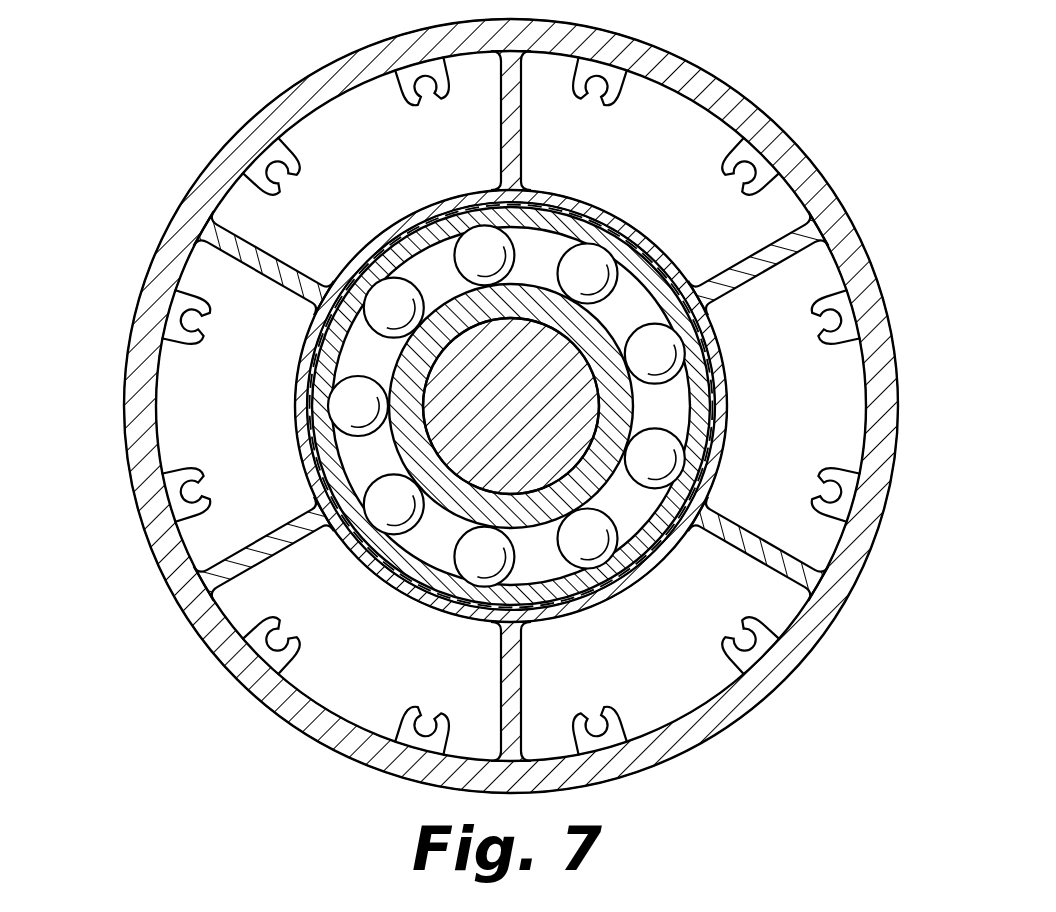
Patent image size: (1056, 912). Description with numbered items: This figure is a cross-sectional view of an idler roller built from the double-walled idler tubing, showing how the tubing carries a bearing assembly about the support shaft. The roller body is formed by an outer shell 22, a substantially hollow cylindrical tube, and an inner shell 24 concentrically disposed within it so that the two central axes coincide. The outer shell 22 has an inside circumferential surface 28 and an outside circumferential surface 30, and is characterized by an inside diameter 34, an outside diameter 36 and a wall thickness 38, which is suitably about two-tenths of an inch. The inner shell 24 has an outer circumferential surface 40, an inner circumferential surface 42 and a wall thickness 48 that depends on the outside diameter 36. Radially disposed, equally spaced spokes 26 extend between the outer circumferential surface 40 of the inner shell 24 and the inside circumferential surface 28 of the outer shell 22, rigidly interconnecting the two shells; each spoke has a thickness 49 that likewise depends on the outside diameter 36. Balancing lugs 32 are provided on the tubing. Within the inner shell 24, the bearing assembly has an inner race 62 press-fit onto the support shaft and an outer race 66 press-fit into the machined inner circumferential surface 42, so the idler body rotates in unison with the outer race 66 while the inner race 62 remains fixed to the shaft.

The outer shell 22 is at (310, 730).
The inner shell 24 is at (299, 378).
The spokes 26 is at (490, 139).
The inside circumferential surface 28 is at (377, 738).
The outside circumferential surface 30 is at (250, 690).
The balancing lugs 32 is at (175, 300).
The inside diameter 34 is at (672, 48).
The outside diameter 36 is at (545, 22).
The wall thickness 38 is at (205, 413).
The outer circumferential surface 40 is at (299, 450).
The inner circumferential surface 42 is at (320, 337).
The wall thickness 48 is at (638, 293).
The thickness 49 is at (455, 677).
The inner race 62 is at (455, 497).
The outer race 66 is at (397, 548).